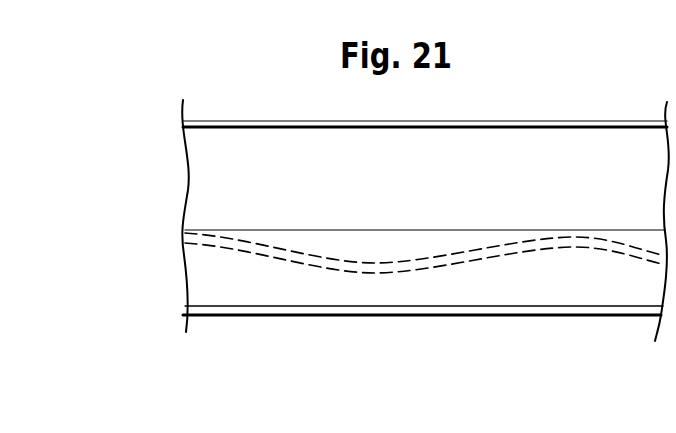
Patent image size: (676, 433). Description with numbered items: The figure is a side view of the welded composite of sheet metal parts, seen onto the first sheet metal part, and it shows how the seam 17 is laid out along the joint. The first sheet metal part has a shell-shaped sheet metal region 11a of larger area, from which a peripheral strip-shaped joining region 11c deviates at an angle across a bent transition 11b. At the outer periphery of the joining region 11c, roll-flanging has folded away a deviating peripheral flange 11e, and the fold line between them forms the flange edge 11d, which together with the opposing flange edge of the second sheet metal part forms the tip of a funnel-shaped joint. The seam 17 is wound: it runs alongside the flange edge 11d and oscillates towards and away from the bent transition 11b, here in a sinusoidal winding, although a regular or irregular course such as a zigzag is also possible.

The shell-shaped sheet metal region 11a is at (308, 316).
The bent transition 11b is at (424, 344).
The peripheral joining region 11c is at (197, 279).
The flange edge 11d is at (228, 229).
The peripheral flange 11e is at (538, 148).
The seam 17 is at (433, 273).